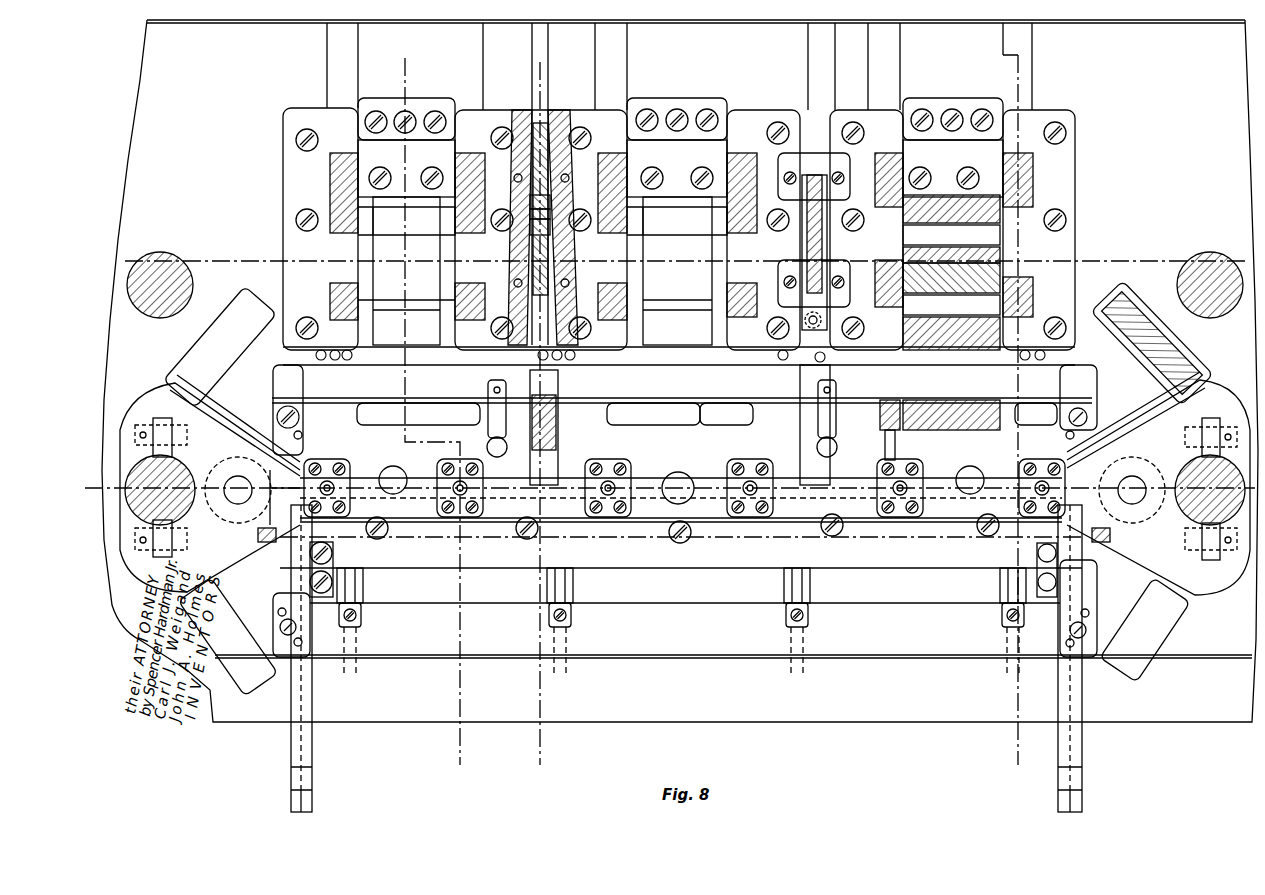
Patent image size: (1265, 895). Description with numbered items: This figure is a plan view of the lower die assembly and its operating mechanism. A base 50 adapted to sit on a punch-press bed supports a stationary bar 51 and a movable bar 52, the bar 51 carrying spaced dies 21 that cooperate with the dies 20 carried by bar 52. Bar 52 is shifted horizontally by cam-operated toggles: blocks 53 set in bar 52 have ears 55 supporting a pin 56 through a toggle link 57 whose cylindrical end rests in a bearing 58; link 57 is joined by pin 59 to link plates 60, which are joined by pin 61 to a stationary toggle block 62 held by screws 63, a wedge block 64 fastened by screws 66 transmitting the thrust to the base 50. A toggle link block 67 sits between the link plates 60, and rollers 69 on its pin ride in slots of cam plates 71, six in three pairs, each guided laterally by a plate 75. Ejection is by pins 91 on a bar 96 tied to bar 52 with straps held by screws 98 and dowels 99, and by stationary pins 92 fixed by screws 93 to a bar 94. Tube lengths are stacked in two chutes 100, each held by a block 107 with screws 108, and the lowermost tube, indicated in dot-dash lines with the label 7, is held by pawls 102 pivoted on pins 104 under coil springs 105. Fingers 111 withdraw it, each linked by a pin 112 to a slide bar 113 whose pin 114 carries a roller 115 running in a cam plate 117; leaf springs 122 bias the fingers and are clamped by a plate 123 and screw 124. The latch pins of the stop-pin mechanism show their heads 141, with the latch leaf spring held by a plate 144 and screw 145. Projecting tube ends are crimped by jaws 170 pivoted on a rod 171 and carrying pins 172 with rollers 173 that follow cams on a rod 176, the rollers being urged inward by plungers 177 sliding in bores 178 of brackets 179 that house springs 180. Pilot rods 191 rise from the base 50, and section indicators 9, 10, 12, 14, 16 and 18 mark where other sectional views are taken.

The section line 7 is at (738, 538).
The section line 9- 9 is at (87, 488).
The section line 10- 10 is at (405, 58).
The section line 12- 12 is at (1018, 55).
The section line 14- 14 is at (542, 62).
The section line 16- 16 is at (496, 377).
The section line 18- 18 is at (127, 261).
The dies 20 is at (325, 458).
The dies 21 is at (350, 505).
The base 50 is at (145, 47).
The stationary bar 51 is at (686, 565).
The movable bar 52 is at (712, 430).
The block 53 is at (416, 418).
The ears 55 is at (1003, 335).
The pin 56 is at (915, 425).
The toggle link 57 is at (385, 342).
The cylindrical bearing 58 is at (970, 425).
The pin 59 is at (1000, 305).
The link plates 60 is at (375, 218).
The pin 61 is at (998, 228).
The toggle block 62 is at (445, 145).
The screws 63 is at (426, 172).
The wedge block 64 is at (370, 112).
The screws 66 is at (434, 112).
The toggle link block 67 is at (388, 270).
The rollers 69 is at (330, 257).
The cam plates 71 is at (330, 178).
The plate 75 is at (312, 108).
The ejector pins 91 is at (337, 585).
The ejector pins 92 is at (357, 413).
The screws 93 is at (340, 361).
The bar 94 is at (315, 354).
The bar 96 is at (432, 650).
The screws 98 is at (280, 415).
The dowels 99 is at (302, 435).
The chutes 100 is at (291, 743).
The pawls 102 is at (272, 508).
The pin 104 is at (258, 535).
The coil spring 105 is at (260, 526).
The block 107 is at (335, 547).
The screws 108 is at (335, 565).
The fingers 111 is at (527, 517).
The pin 112 is at (558, 405).
The slide bar 113 is at (548, 110).
The pin 114 is at (552, 212).
The roller 115 is at (552, 232).
The cam plate 117 is at (530, 200).
The leaf spring 122 is at (800, 443).
The plate 123 is at (814, 410).
The screw 124 is at (812, 360).
The head 141 is at (507, 450).
The plate 144 is at (488, 410).
The screw 145 is at (506, 440).
The jaws 170 is at (228, 420).
The rod 171 is at (238, 476).
The pins 172 is at (1190, 427).
The rollers 173 is at (163, 418).
The rod 176 is at (1195, 515).
The plungers 177 is at (210, 382).
The bores 178 is at (1150, 308).
The brackets 179 is at (195, 350).
The springs 180 is at (1142, 300).
The pilot rod 191 is at (160, 252).